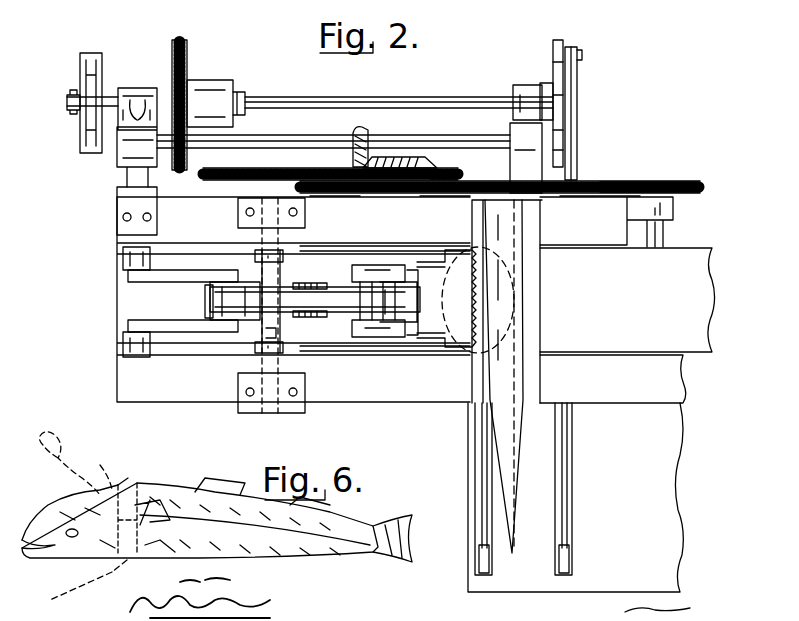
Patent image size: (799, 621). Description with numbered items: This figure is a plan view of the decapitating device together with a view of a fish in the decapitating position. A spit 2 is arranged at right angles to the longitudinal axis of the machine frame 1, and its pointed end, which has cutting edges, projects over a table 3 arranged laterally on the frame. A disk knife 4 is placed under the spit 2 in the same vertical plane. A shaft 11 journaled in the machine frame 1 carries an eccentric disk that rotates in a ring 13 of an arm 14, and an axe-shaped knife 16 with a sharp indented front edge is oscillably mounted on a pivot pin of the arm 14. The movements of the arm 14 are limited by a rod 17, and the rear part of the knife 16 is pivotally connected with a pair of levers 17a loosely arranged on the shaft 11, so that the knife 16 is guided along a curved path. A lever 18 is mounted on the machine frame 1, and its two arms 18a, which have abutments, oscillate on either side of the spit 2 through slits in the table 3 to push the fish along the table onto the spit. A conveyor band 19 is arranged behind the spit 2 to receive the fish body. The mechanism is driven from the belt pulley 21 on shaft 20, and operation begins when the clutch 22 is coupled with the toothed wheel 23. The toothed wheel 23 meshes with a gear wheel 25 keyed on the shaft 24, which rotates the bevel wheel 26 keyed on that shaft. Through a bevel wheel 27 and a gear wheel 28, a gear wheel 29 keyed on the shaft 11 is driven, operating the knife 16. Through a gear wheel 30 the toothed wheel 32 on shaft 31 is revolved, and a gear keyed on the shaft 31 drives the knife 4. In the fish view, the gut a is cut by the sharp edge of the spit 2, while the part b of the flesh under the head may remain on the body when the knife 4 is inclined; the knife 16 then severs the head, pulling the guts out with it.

In FIG. 2, the machine frame 1 is at (118, 371).
In FIG. 2, the spit 2 is at (482, 369).
In FIG. 2, the table 3 is at (575, 497).
In FIG. 2, the disk knife 4 is at (441, 309).
In FIG. 6, the disk knife 4 is at (66, 590).
In FIG. 2, the shaft 11 is at (255, 340).
In FIG. 2, the ring 13 is at (299, 292).
In FIG. 2, the arm 14 is at (345, 300).
In FIG. 2, the axe-shaped knife 16 is at (455, 250).
In FIG. 6, the axe-shaped knife 16 is at (68, 456).
In FIG. 2, the rod 17 is at (168, 277).
In FIG. 2, the pair of levers 17a is at (340, 245).
In FIG. 2, the lever 18 is at (572, 112).
In FIG. 2, the arms 18a is at (486, 458).
In FIG. 2, the conveyor band 19 is at (627, 325).
In FIG. 2, the shaft 20 is at (278, 100).
In FIG. 2, the belt pulley 21 is at (100, 70).
In FIG. 2, the clutch 22 is at (205, 82).
In FIG. 2, the toothed wheel 23 is at (187, 40).
In FIG. 2, the shaft 24 is at (268, 146).
In FIG. 2, the gear wheel 25 is at (170, 174).
In FIG. 2, the bevel wheel 26 is at (366, 134).
In FIG. 2, the bevel wheel 27 is at (412, 157).
In FIG. 2, the gear wheel 28 is at (455, 175).
In FIG. 2, the gear wheel 29 is at (272, 175).
In FIG. 2, the gear wheel 30 is at (588, 180).
In FIG. 2, the shaft 31 is at (663, 235).
In FIG. 2, the toothed wheel 32 is at (660, 180).
In FIG. 6, the gut a is at (130, 468).
In FIG. 6, the part of the flesh b is at (114, 574).